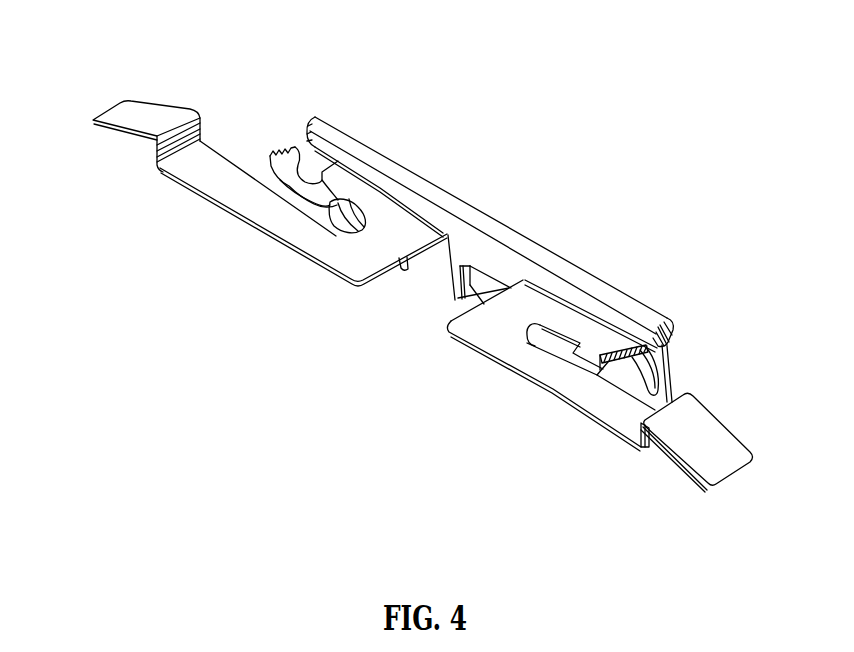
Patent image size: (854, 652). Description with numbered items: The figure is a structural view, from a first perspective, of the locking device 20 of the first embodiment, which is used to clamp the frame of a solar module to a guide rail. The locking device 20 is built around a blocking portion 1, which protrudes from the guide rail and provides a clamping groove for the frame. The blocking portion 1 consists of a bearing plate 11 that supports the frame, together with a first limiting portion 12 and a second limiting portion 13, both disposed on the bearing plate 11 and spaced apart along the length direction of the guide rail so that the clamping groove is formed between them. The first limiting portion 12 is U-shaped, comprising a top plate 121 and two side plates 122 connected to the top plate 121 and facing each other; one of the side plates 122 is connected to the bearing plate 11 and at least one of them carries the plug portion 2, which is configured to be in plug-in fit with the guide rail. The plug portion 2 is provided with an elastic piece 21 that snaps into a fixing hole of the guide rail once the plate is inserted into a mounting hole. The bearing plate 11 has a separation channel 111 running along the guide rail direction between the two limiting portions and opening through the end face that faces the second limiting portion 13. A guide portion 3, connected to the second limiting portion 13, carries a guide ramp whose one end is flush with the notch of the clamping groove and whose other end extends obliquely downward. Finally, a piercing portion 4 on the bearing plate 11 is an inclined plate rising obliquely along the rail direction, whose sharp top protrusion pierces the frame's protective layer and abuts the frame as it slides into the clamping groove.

The locking device 20 is at (295, 47).
The blocking portion 1 is at (520, 270).
The bearing plate 11 is at (491, 322).
The separation channel 111 is at (551, 344).
The first limiting portion 12 is at (613, 285).
The top plate 121 is at (420, 176).
The side plates 122 is at (467, 232).
The second limiting portion 13 is at (657, 440).
The plug portion 2 is at (448, 278).
The elastic piece 21 is at (455, 302).
The guide portion 3 is at (708, 445).
The piercing portion 4 is at (597, 373).